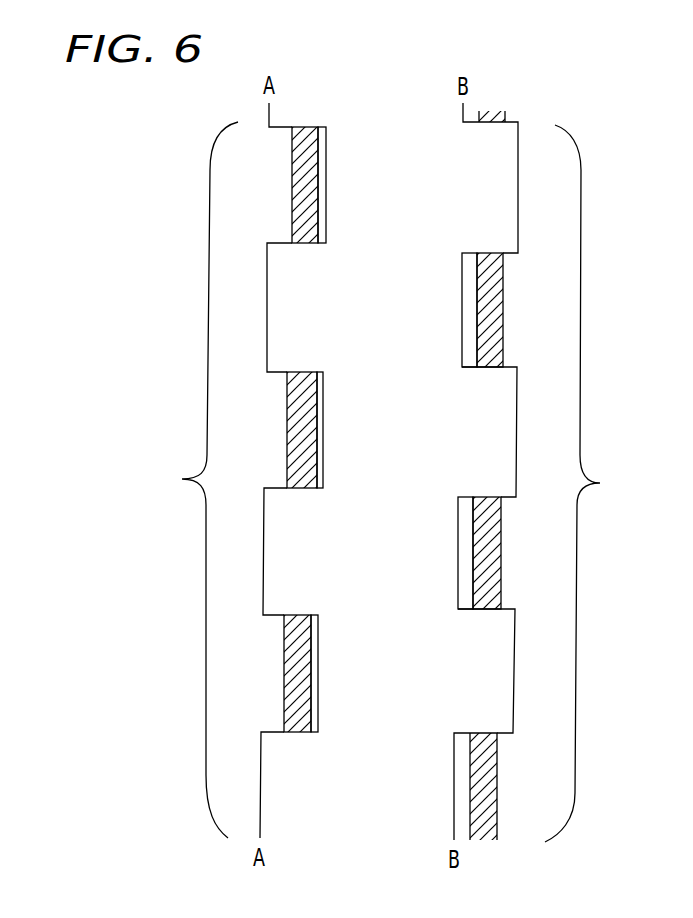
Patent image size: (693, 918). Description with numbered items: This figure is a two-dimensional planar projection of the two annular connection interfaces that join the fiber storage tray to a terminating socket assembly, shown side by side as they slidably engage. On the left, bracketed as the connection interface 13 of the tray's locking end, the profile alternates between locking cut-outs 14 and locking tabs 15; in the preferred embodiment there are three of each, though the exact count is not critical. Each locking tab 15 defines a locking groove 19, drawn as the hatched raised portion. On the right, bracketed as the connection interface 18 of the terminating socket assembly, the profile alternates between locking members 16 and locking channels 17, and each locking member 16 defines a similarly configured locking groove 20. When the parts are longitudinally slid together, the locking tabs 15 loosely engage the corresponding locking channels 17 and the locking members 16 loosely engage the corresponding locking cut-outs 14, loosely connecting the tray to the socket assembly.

The connection interface 13 is at (191, 480).
The locking cut-out 14 is at (280, 312).
The locking tab 15 is at (327, 189).
The locking member 16 is at (462, 304).
The locking channel 17 is at (497, 193).
The connection interface 18 is at (592, 483).
The locking groove 19 is at (300, 440).
The locking groove 20 is at (482, 539).